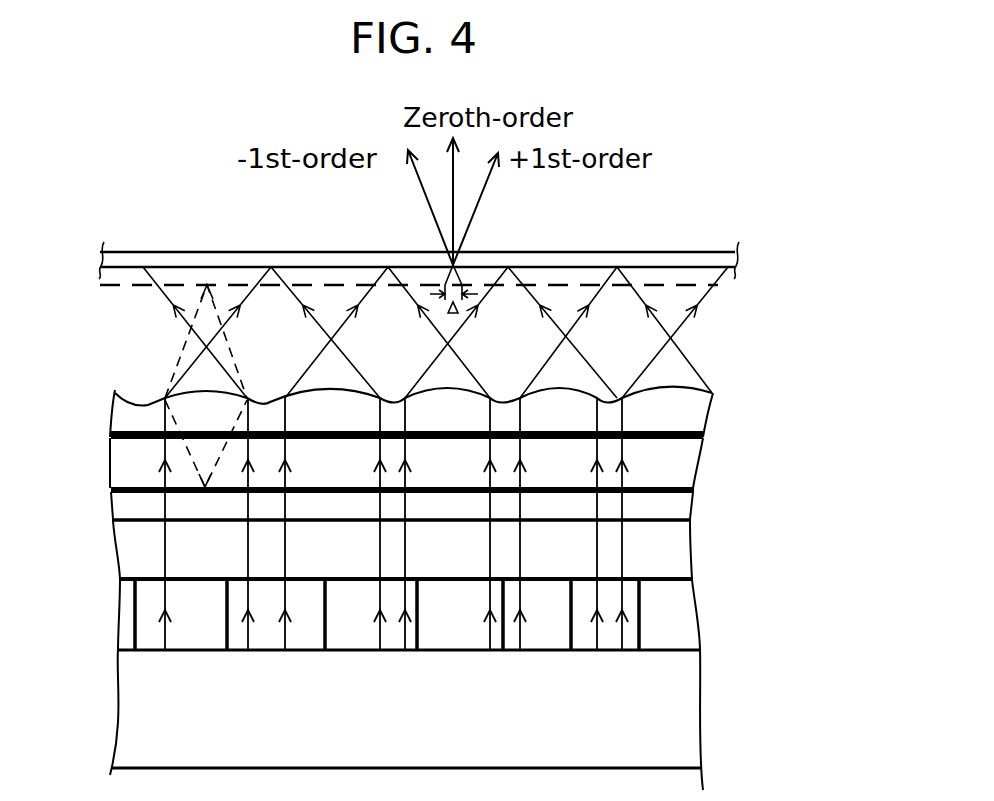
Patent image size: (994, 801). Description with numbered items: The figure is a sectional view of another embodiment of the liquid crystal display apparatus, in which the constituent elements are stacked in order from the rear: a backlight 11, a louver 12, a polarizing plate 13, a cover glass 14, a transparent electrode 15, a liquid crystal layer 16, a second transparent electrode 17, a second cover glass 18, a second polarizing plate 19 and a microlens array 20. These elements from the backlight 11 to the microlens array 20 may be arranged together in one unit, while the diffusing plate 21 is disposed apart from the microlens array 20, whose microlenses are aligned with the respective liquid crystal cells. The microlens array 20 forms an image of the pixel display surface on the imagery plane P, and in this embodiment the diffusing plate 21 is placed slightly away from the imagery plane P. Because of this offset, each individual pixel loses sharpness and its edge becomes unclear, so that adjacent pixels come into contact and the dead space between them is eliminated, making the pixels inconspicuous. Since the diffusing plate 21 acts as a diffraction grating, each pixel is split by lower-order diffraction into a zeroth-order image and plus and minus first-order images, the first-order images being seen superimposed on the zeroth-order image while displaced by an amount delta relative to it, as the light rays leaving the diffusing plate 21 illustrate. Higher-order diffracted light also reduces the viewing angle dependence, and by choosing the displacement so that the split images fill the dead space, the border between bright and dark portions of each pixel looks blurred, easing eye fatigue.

The backlight 11 is at (667, 728).
The louver 12 is at (683, 628).
The polarizing plate 13 is at (692, 577).
The cover glass 14 is at (680, 548).
The transparent electrode 15 is at (692, 517).
The liquid crystal layer 16 is at (680, 503).
The transparent electrode 17 is at (692, 488).
The cover glass 18 is at (685, 460).
The polarizing plate 19 is at (700, 432).
The microlens array 20 is at (695, 412).
The diffusing plate 21 is at (737, 253).
The imagery plane P is at (717, 288).